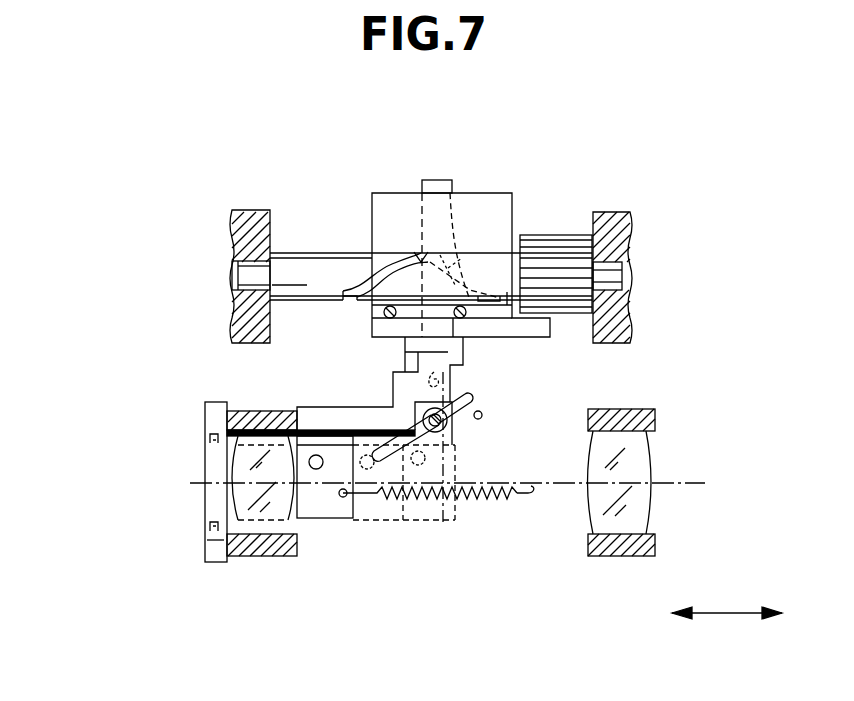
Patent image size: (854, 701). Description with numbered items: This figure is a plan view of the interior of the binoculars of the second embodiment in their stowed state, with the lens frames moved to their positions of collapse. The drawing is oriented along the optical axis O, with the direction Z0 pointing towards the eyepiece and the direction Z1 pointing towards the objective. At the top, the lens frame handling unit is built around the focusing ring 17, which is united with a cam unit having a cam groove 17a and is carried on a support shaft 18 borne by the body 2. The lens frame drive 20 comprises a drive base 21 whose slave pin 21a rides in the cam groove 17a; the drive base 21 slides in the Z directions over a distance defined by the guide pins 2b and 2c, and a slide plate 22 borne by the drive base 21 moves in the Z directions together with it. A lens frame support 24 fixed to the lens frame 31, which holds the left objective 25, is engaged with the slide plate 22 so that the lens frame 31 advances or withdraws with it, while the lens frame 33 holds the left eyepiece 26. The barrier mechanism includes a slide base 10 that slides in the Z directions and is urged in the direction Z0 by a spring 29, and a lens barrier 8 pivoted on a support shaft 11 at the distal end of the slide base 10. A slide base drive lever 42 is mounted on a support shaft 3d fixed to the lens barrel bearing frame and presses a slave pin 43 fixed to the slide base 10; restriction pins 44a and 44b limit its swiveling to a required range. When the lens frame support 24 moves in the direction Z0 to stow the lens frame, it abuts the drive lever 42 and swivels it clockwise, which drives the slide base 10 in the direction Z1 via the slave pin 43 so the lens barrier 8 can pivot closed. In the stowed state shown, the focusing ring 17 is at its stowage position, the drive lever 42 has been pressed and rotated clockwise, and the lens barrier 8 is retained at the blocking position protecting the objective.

The body 2 is at (633, 224).
The guide pin 2b is at (384, 316).
The guide pin 2c is at (476, 298).
The support shaft 3d is at (447, 428).
The lens barrier 8 is at (215, 502).
The slide base 10 is at (316, 520).
The support shaft 11 is at (202, 532).
The focusing ring 17 is at (553, 262).
The cam groove 17a is at (386, 262).
The support shaft 18 is at (613, 270).
The lens frame drive 20 is at (413, 178).
The drive base 21 is at (388, 193).
The slave pin 21a is at (471, 212).
The slide plate 22 is at (406, 346).
The lens frame support 24 is at (393, 378).
The left objective 25 is at (228, 465).
The left eyepiece 26 is at (652, 464).
The spring 29 is at (510, 502).
The lens frame 31 is at (250, 562).
The lens frame 33 is at (655, 412).
The slide base drive lever 42 is at (472, 399).
The slave pin 43 is at (320, 470).
The restriction pin 44a is at (483, 416).
The restriction pin 44b is at (452, 378).
The optical axis O is at (690, 487).
The direction Z1 is at (688, 620).
The direction Z0 is at (768, 620).